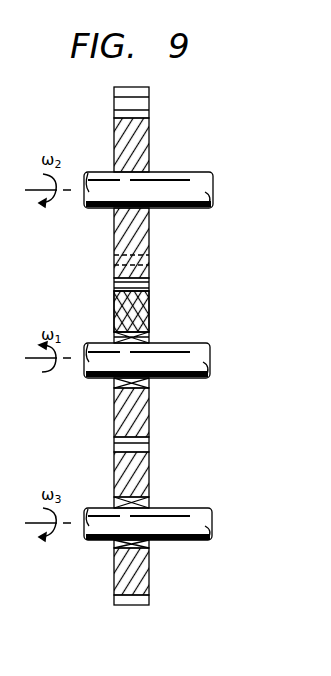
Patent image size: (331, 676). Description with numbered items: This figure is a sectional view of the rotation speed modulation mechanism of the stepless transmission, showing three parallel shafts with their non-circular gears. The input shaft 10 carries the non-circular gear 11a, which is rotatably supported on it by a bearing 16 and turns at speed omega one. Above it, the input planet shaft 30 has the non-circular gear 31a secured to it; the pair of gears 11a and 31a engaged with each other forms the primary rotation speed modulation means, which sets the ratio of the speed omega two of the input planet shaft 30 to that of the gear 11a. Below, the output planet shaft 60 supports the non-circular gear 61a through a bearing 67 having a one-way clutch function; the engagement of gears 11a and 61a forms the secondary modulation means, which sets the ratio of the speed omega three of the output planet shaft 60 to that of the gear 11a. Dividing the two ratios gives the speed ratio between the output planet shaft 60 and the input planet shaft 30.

The input planet shaft 30 is at (190, 175).
The non-circular gear 31a is at (147, 232).
The bearing 16 is at (149, 336).
The input shaft 10 is at (190, 356).
The non-circular gear 11a is at (145, 410).
The output planet shaft 60 is at (188, 516).
The bearing 67 is at (149, 547).
The non-circular gear 61a is at (147, 583).